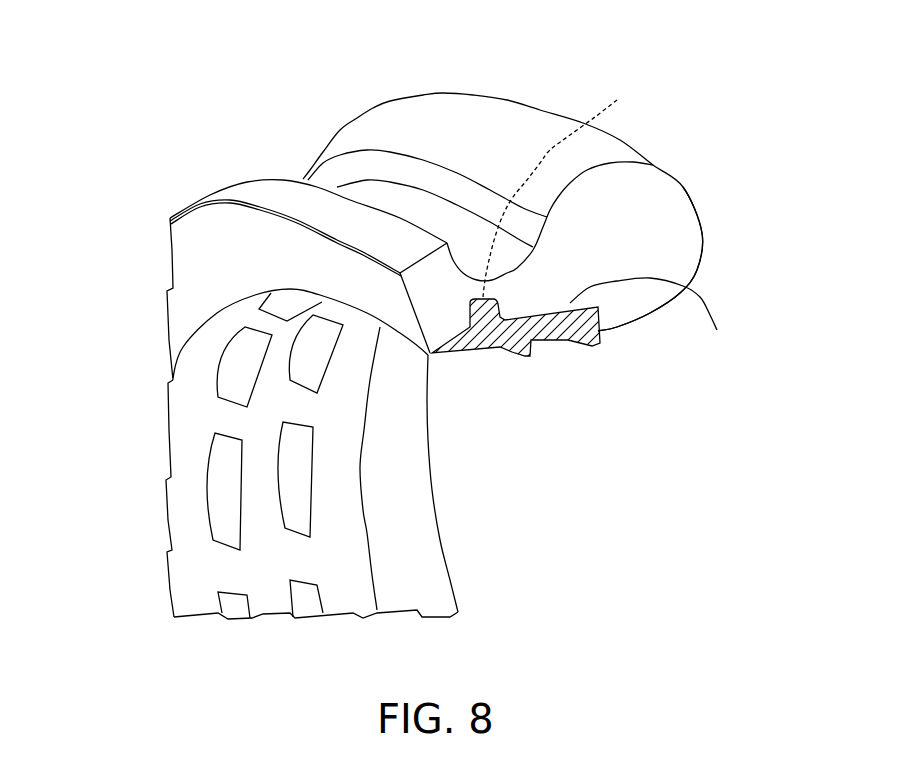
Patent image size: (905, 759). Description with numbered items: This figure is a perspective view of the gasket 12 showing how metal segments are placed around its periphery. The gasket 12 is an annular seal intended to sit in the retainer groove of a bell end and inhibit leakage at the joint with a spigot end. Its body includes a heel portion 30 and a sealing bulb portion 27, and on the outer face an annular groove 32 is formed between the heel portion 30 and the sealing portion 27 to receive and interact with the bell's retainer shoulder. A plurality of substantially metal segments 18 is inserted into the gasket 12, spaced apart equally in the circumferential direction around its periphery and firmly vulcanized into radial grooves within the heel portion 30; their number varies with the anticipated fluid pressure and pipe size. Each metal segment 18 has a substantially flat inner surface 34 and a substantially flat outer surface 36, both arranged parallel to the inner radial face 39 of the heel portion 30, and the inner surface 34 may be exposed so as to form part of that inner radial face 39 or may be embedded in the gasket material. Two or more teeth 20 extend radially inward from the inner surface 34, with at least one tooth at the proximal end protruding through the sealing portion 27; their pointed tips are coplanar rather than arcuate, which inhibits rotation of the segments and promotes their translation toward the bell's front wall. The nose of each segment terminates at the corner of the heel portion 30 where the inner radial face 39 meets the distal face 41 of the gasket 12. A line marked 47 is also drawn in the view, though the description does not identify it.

The gasket 12 is at (277, 146).
The heel portion 30 is at (278, 266).
The distal face 41 is at (245, 180).
The annular groove 32 is at (432, 210).
The hinge web 47 is at (574, 184).
The sealing bulb portion 27 is at (692, 190).
The outer surface 36 is at (661, 320).
The inner surface 34 is at (531, 351).
The teeth 20 is at (528, 358).
The metal segments 18 is at (188, 480).
The inner radial face 39 is at (345, 523).